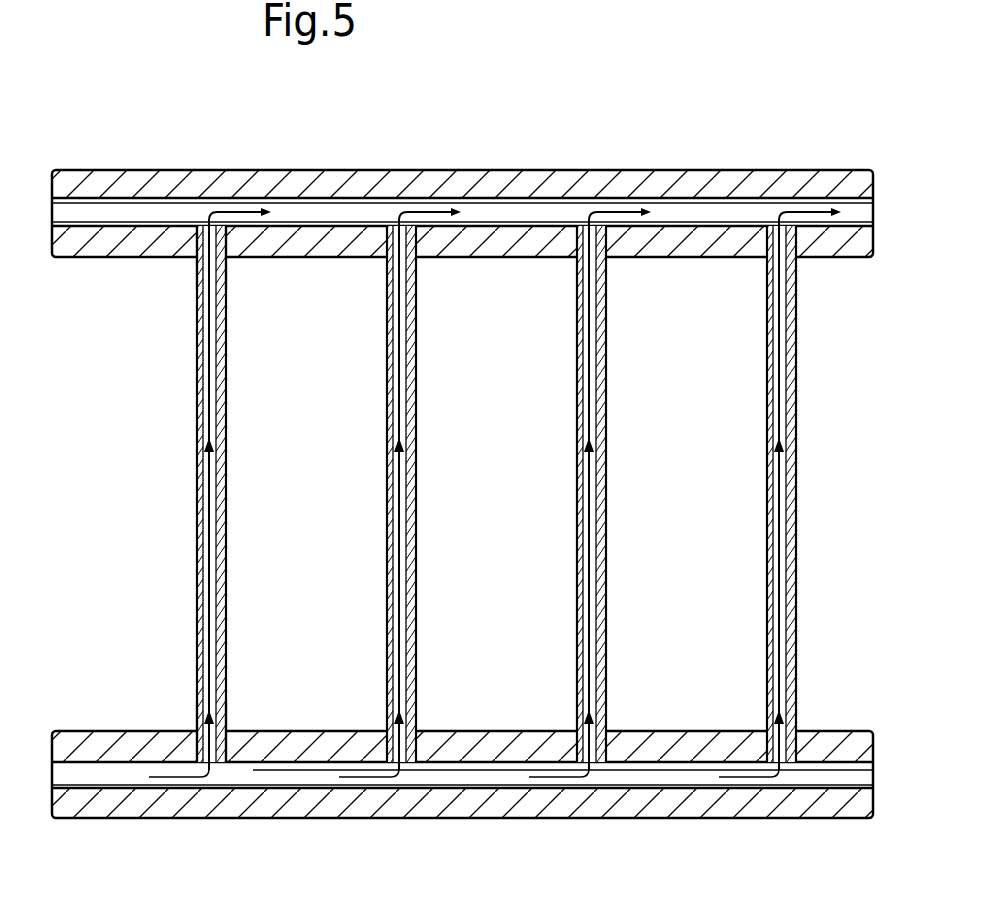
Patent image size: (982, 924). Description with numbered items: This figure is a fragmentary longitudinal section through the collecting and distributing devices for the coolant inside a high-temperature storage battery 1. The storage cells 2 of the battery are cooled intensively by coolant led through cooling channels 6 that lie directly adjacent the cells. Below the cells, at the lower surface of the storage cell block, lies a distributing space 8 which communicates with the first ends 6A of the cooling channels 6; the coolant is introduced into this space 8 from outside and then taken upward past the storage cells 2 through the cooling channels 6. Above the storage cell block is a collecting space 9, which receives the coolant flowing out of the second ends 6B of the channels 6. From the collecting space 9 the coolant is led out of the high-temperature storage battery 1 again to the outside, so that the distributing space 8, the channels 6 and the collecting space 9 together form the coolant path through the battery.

The high-temperature storage battery 1 is at (657, 168).
The storage cell 2 is at (671, 710).
The cooling channel 6 is at (389, 680).
The first end of cooling channel 6A is at (216, 766).
The second end of cooling channel 6B is at (222, 226).
The distributing space 8 is at (472, 775).
The collecting space 9 is at (326, 216).